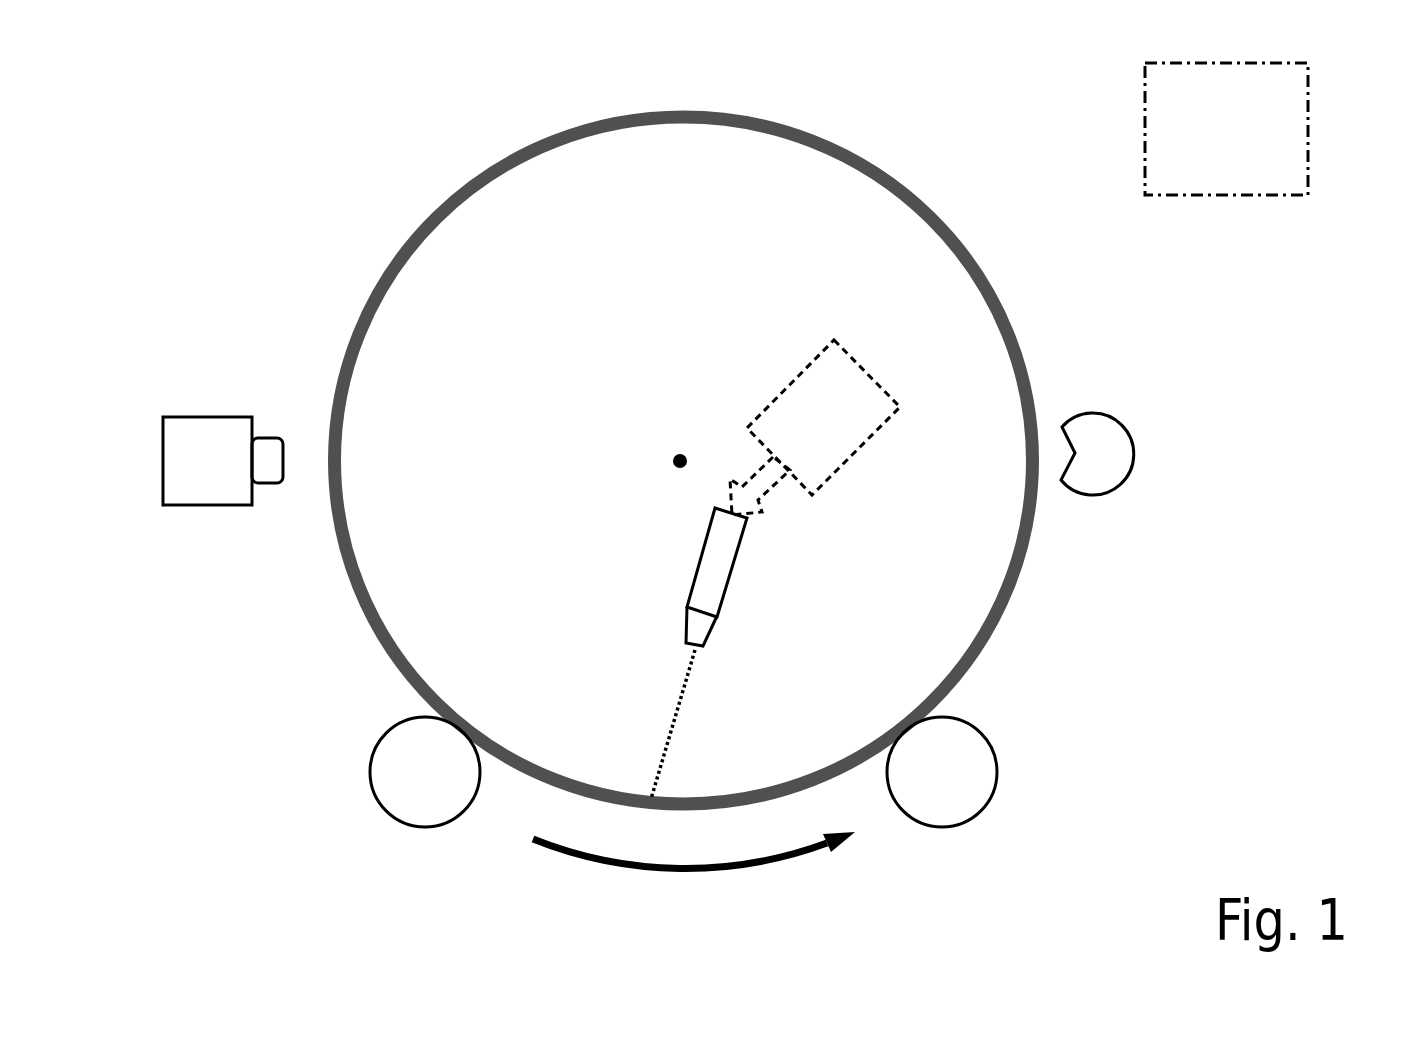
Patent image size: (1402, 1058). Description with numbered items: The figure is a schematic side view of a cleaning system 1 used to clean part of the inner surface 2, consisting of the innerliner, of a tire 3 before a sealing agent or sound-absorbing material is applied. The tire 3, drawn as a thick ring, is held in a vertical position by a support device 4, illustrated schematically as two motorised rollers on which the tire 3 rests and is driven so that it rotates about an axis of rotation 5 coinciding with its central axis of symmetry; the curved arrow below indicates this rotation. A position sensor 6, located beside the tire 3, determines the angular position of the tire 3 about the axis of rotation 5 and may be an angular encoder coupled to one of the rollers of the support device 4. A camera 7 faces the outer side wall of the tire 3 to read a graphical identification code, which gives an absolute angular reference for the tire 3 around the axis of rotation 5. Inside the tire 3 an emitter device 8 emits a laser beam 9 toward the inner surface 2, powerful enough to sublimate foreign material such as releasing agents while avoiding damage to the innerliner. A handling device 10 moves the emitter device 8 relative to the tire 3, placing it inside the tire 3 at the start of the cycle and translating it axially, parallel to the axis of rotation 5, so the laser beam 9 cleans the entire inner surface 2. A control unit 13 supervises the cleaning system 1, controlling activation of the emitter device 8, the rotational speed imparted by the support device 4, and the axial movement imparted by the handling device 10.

The cleaning system 1 is at (169, 81).
The inner surface 2 is at (688, 128).
The tire 3 is at (975, 277).
The support device 4 is at (328, 752).
The axis of rotation 5 is at (678, 452).
The position sensor 6 is at (1100, 455).
The camera 7 is at (215, 462).
The emitter device 8 is at (652, 542).
The laser beam 9 is at (670, 722).
The handling device 10 is at (815, 427).
The control unit 13 is at (1226, 129).